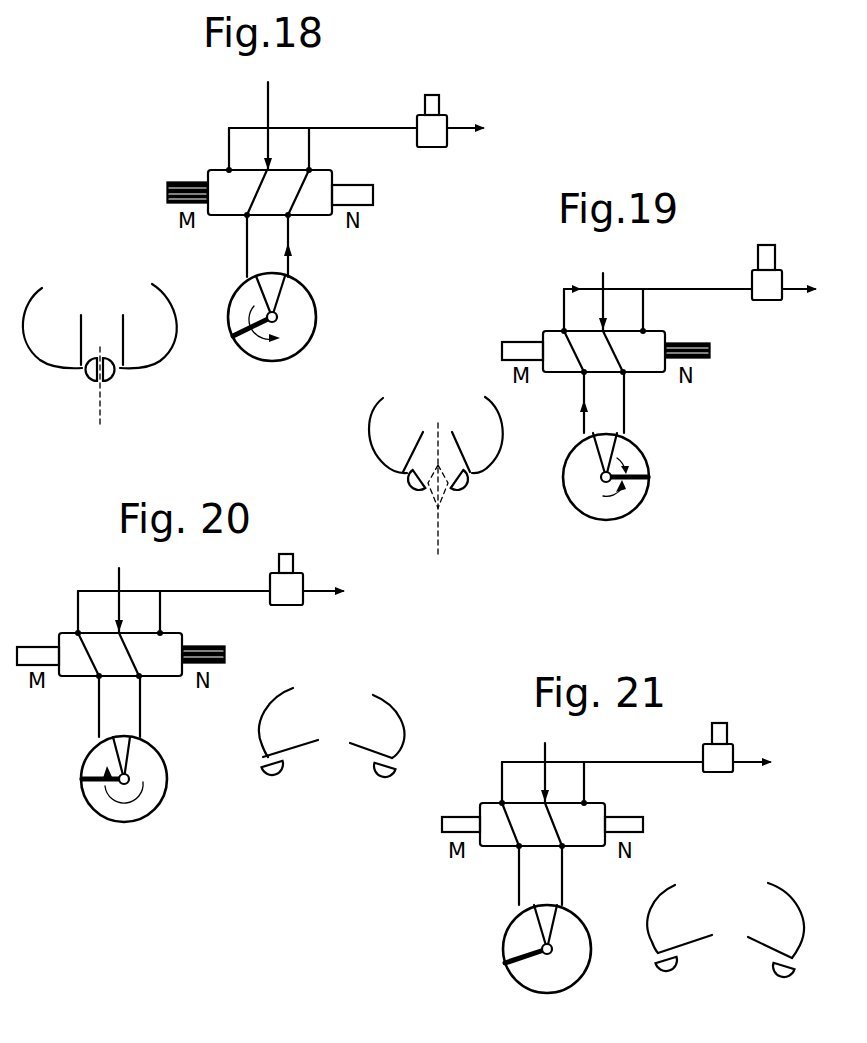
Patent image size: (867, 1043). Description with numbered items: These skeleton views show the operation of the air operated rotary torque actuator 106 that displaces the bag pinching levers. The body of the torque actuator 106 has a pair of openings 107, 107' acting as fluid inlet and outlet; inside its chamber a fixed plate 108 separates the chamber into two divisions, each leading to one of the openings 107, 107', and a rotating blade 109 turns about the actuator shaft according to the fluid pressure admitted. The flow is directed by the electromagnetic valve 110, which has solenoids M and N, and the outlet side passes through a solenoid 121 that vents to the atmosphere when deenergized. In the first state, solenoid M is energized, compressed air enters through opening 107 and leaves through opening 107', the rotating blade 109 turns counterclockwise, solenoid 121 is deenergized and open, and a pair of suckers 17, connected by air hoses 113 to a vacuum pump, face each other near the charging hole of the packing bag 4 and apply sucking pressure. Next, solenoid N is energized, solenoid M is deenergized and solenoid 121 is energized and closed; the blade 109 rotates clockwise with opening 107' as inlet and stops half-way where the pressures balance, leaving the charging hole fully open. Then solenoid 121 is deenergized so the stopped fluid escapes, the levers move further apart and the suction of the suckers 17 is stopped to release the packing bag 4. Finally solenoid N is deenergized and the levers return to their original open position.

In FIG. 18, the electromagnetic valve 110 is at (238, 206).
In FIG. 19, the electromagnetic valve 110 is at (570, 370).
In FIG. 20, the electromagnetic valve 110 is at (87, 675).
In FIG. 21, the electromagnetic valve 110 is at (505, 840).
In FIG. 18, the solenoid 121 is at (451, 139).
In FIG. 19, the solenoid 121 is at (784, 288).
In FIG. 20, the solenoid 121 is at (307, 595).
In FIG. 21, the solenoid 121 is at (737, 764).
In FIG. 18, the opening 107 is at (227, 246).
In FIG. 19, the opening 107 is at (565, 402).
In FIG. 20, the opening 107 is at (78, 706).
In FIG. 21, the opening 107 is at (496, 875).
In FIG. 18, the opening 107' is at (308, 246).
In FIG. 19, the opening 107' is at (642, 402).
In FIG. 20, the opening 107' is at (161, 706).
In FIG. 21, the opening 107' is at (582, 875).
In FIG. 18, the fixed plate 108 is at (244, 289).
In FIG. 19, the fixed plate 108 is at (596, 445).
In FIG. 20, the fixed plate 108 is at (128, 752).
In FIG. 21, the fixed plate 108 is at (540, 922).
In FIG. 18, the torque actuator 106 is at (317, 313).
In FIG. 19, the torque actuator 106 is at (647, 457).
In FIG. 20, the torque actuator 106 is at (166, 795).
In FIG. 21, the torque actuator 106 is at (589, 942).
In FIG. 18, the rotating blade 109 is at (245, 339).
In FIG. 19, the rotating blade 109 is at (649, 480).
In FIG. 20, the rotating blade 109 is at (84, 790).
In FIG. 21, the rotating blade 109 is at (511, 950).
In FIG. 18, the air hose 113 is at (37, 333).
In FIG. 19, the air hose 113 is at (383, 447).
In FIG. 20, the air hose 113 is at (265, 727).
In FIG. 21, the air hose 113 is at (653, 925).
In FIG. 18, the sucker 17 is at (83, 376).
In FIG. 19, the sucker 17 is at (413, 487).
In FIG. 20, the sucker 17 is at (272, 775).
In FIG. 21, the sucker 17 is at (670, 967).
In FIG. 18, the packing bag 4 is at (102, 411).